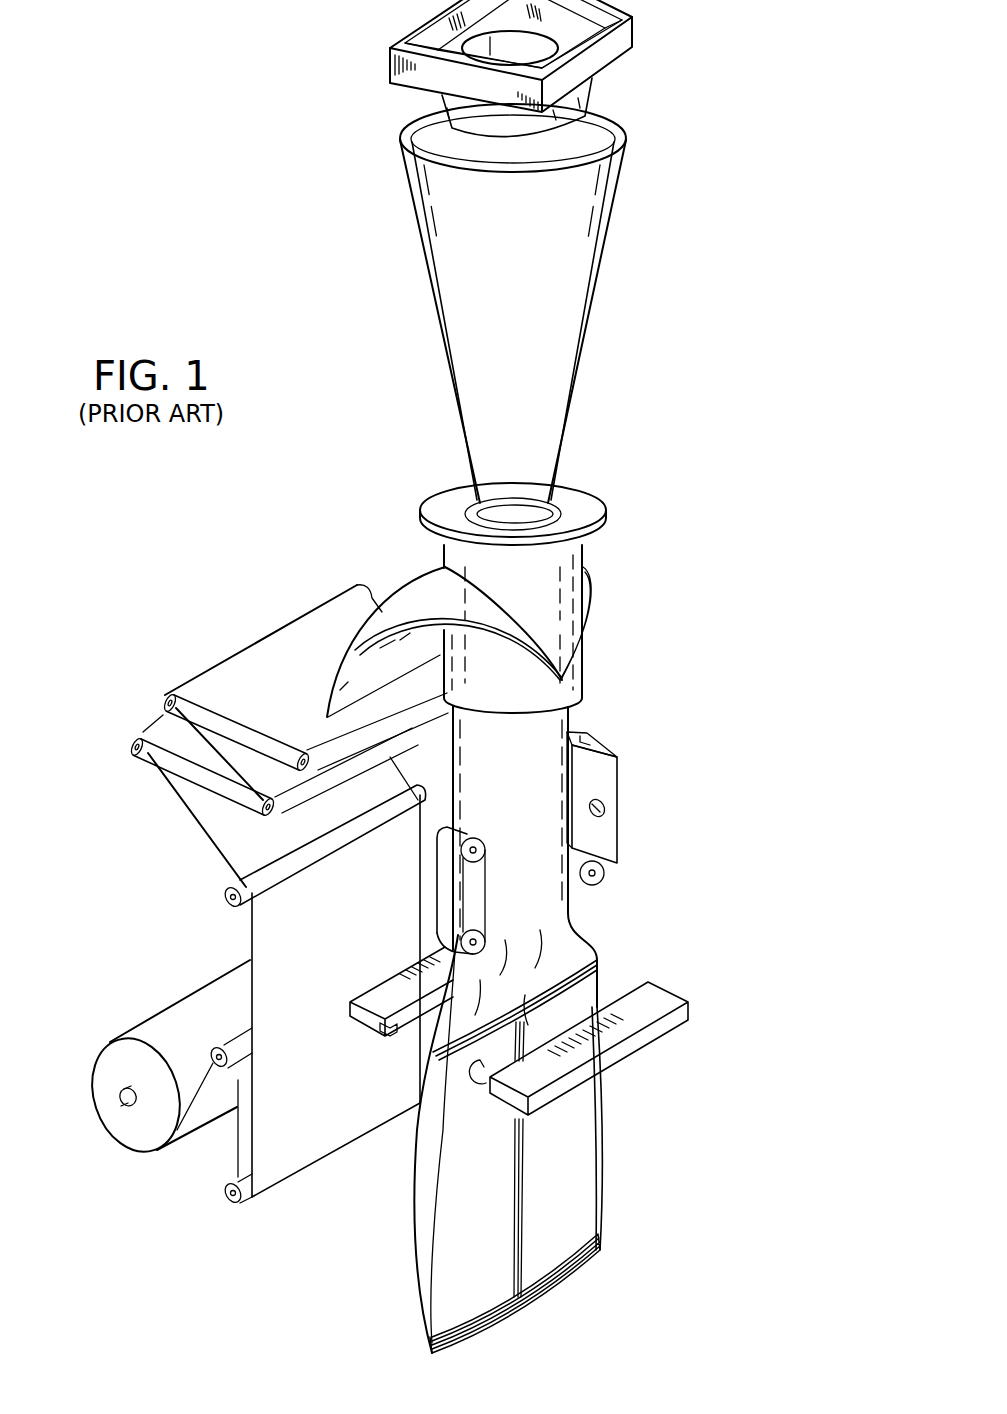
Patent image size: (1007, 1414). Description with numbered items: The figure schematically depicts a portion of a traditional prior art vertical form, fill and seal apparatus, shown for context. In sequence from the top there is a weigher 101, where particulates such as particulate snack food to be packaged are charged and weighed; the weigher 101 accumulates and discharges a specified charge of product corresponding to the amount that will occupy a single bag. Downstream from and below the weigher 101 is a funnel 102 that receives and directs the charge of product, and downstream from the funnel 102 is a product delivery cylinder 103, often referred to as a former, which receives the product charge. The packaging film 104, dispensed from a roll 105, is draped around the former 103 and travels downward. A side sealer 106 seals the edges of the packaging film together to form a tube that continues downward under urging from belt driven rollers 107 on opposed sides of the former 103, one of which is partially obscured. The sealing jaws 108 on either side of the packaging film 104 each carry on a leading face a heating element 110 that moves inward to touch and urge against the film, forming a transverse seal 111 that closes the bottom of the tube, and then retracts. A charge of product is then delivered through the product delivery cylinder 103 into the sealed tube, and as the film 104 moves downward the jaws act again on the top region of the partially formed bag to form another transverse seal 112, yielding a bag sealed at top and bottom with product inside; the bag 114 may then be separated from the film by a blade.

The weigher 101 is at (390, 61).
The funnel 102 is at (435, 322).
The product delivery cylinder 103 is at (437, 505).
The packaging film 104 is at (267, 650).
The roll 105 is at (177, 1003).
The side sealer 106 is at (620, 810).
The belt driven rollers 107 is at (485, 887).
The sealing jaws 108 is at (363, 988).
The heating element 110 is at (407, 1036).
The transverse seal 111 is at (602, 1253).
The transverse seal 112 is at (598, 957).
The bag 114 is at (585, 1195).